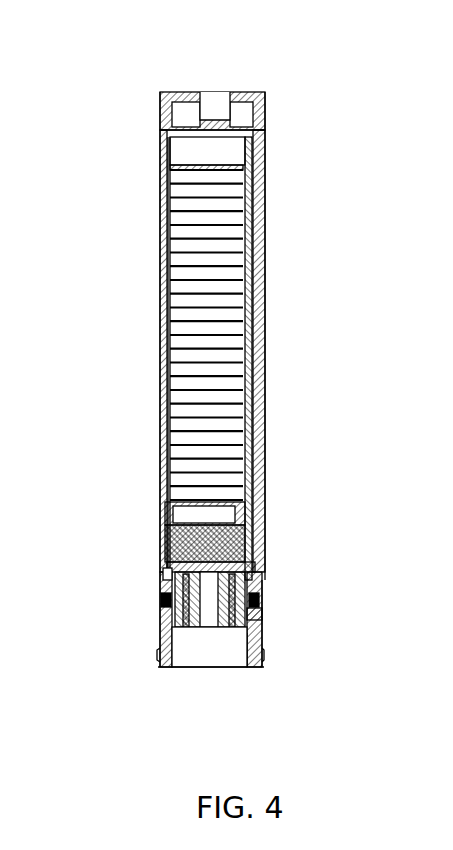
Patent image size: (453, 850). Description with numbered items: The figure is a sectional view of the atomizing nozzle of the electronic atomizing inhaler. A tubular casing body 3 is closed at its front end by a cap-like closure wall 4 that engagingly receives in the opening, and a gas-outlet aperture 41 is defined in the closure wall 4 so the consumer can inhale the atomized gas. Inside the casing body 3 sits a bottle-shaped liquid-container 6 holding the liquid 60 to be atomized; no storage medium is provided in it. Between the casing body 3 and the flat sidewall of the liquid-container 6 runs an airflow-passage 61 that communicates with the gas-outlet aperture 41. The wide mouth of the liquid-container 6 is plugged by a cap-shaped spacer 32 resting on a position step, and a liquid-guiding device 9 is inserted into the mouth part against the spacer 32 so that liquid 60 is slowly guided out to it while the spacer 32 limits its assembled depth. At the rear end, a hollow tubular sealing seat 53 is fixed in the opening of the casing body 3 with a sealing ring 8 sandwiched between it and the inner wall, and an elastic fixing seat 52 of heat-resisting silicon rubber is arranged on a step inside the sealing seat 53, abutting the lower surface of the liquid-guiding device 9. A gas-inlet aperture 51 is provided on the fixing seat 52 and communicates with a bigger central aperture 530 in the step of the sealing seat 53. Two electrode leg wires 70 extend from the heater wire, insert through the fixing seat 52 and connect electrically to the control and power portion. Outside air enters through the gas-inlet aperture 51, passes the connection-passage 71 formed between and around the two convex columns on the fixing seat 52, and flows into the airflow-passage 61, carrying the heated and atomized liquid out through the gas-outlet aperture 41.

The casing body 3 is at (282, 351).
The closure wall 4 is at (153, 74).
The gas-outlet aperture 41 is at (247, 70).
The liquid-container 6 is at (286, 358).
The liquid 60 is at (141, 327).
The airflow-passage 61 is at (292, 132).
The spacer 32 is at (289, 444).
The liquid-guiding device 9 is at (142, 507).
The connection-passage 71 is at (290, 502).
The fixing seat 52 is at (287, 558).
The electrode leg wires 70 is at (106, 602).
The sealing ring 8 is at (324, 675).
The sealing seat 53 is at (152, 686).
The gas-inlet aperture 51 is at (184, 659).
The central aperture 530 is at (252, 657).